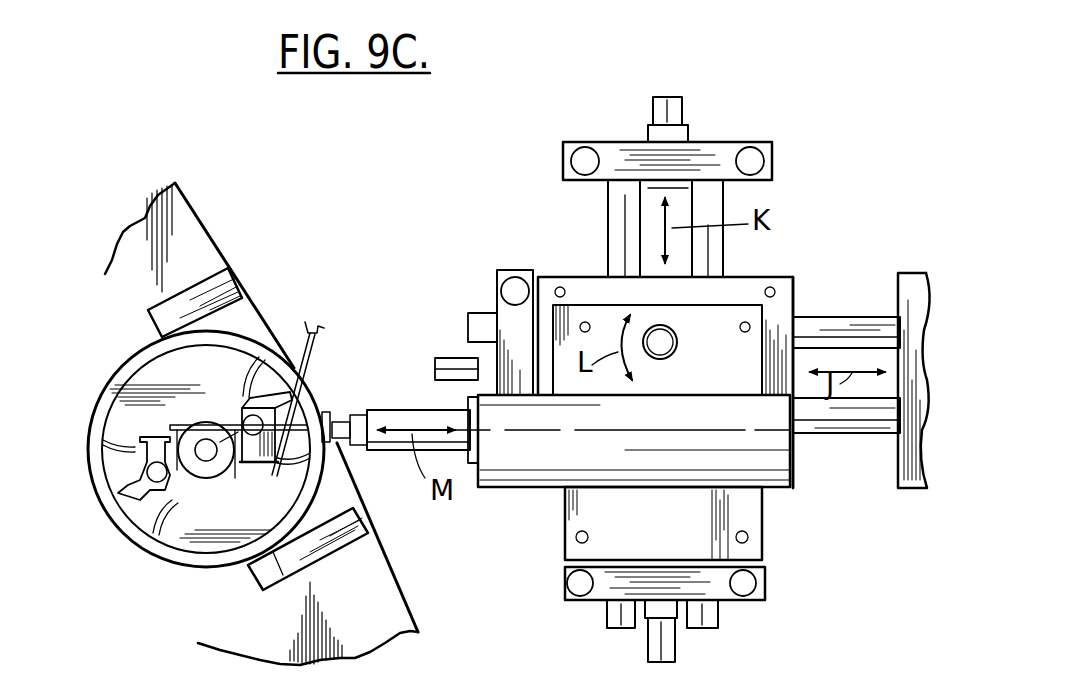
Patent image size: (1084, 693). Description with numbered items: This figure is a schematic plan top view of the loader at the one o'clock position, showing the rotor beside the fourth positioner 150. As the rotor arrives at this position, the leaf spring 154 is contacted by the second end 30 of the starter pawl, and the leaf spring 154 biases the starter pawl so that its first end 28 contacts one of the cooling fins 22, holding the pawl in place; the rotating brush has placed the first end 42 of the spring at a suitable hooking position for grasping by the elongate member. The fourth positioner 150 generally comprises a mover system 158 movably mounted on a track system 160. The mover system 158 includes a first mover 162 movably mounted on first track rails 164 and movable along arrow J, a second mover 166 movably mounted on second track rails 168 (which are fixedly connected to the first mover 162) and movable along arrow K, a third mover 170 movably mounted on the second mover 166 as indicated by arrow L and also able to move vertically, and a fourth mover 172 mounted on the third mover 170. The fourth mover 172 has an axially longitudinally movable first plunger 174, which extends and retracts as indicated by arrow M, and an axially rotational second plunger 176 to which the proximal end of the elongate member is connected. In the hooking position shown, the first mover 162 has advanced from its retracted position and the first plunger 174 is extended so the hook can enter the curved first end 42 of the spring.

The cooling fin 22 is at (310, 397).
The first end of the starter pawl 28 is at (265, 392).
The second end of the starter pawl 30 is at (257, 466).
The first end of the spring 42 is at (230, 477).
The fourth positioner 150 is at (447, 262).
The leaf spring 154 is at (322, 334).
The mover system 158 is at (755, 521).
The track system 160 is at (740, 250).
The first mover 162 is at (795, 285).
The first track rails 164 is at (867, 317).
The second mover 166 is at (755, 549).
The second track rails 168 is at (608, 205).
The third mover 170 is at (740, 376).
The fourth mover 172 is at (512, 460).
The first plunger 174 is at (395, 410).
The second plunger 176 is at (345, 440).